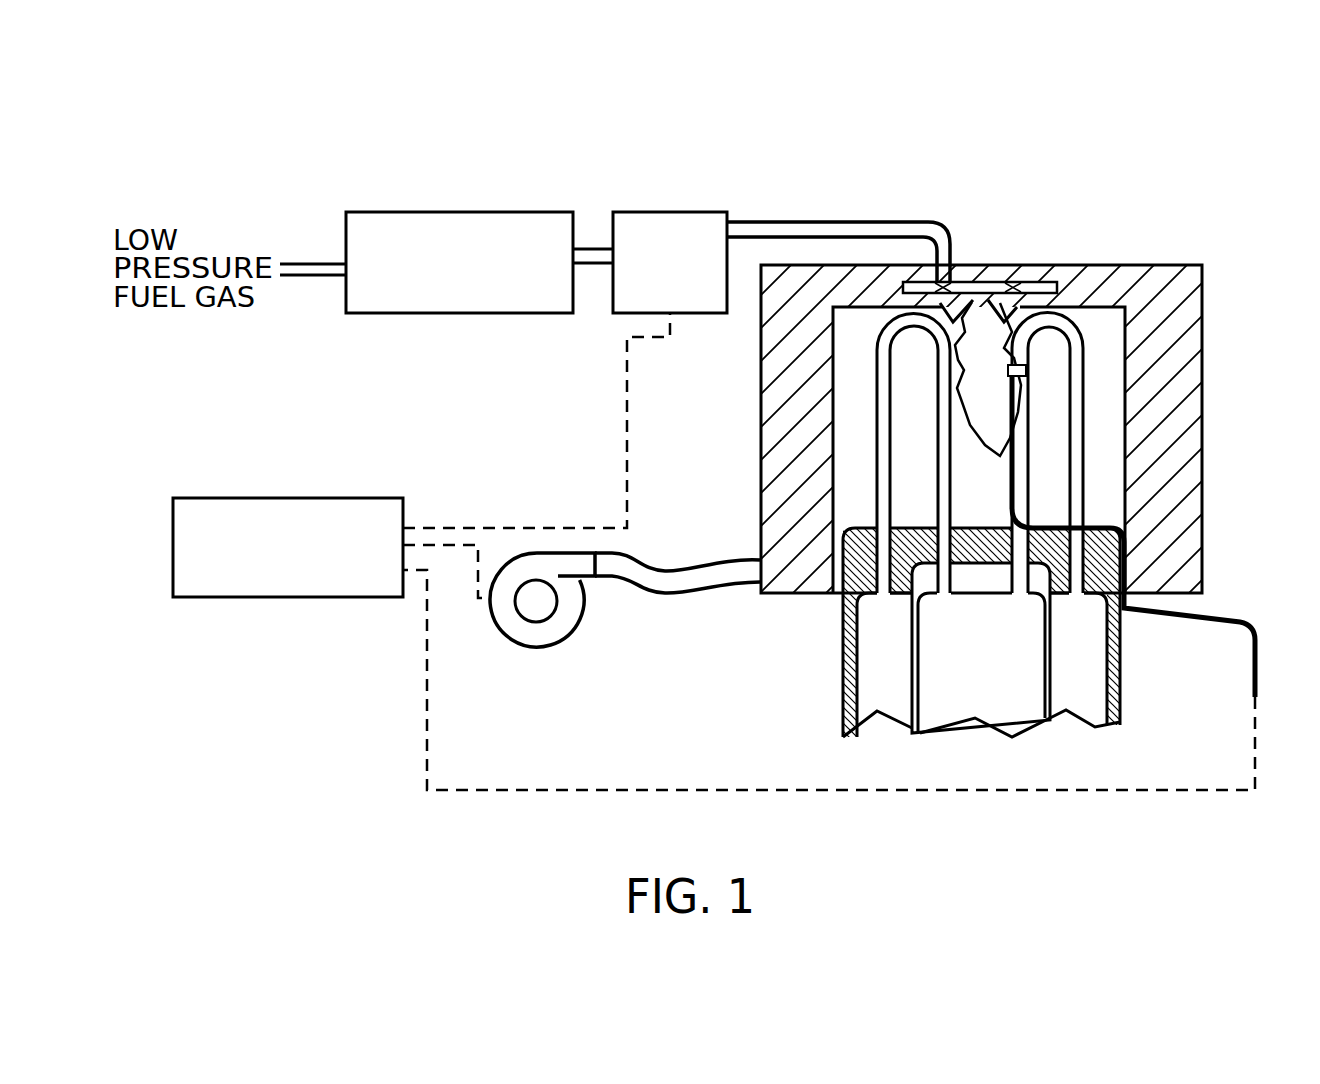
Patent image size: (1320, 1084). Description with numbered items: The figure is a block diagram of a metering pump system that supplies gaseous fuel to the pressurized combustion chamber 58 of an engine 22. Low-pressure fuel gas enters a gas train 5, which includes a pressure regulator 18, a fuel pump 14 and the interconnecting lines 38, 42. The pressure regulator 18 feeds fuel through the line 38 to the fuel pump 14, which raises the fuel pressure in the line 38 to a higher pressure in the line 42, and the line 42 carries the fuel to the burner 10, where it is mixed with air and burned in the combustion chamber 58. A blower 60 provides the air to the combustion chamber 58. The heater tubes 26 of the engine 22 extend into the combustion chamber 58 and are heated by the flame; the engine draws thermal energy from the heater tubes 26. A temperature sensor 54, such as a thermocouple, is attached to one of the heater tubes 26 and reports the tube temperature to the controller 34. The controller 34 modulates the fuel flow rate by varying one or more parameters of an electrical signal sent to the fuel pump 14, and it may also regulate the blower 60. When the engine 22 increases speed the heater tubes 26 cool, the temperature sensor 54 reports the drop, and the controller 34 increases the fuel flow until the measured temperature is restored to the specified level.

The gas train 5 is at (489, 126).
The burner 10 is at (1197, 365).
The fuel pump 14 is at (680, 212).
The pressure regulator 18 is at (383, 315).
The engine 22 is at (888, 718).
The heater tubes 26 is at (1083, 360).
The controller 34 is at (233, 598).
The line 38 is at (592, 247).
The line 42 is at (812, 236).
The temperature sensor 54 is at (1027, 373).
The combustion chamber 58 is at (975, 382).
The blower 60 is at (506, 640).